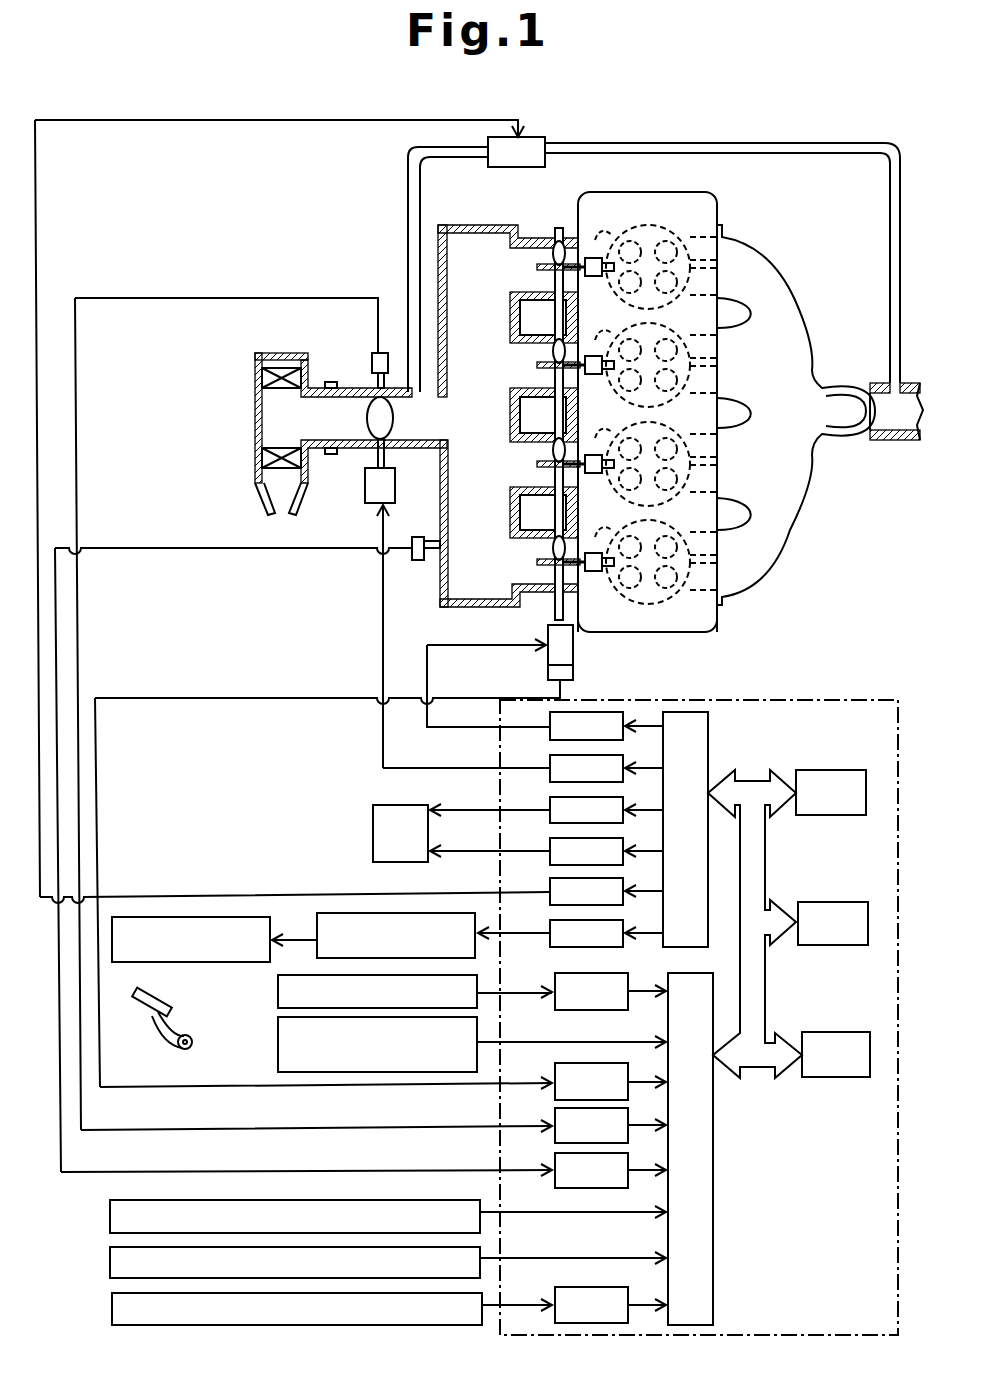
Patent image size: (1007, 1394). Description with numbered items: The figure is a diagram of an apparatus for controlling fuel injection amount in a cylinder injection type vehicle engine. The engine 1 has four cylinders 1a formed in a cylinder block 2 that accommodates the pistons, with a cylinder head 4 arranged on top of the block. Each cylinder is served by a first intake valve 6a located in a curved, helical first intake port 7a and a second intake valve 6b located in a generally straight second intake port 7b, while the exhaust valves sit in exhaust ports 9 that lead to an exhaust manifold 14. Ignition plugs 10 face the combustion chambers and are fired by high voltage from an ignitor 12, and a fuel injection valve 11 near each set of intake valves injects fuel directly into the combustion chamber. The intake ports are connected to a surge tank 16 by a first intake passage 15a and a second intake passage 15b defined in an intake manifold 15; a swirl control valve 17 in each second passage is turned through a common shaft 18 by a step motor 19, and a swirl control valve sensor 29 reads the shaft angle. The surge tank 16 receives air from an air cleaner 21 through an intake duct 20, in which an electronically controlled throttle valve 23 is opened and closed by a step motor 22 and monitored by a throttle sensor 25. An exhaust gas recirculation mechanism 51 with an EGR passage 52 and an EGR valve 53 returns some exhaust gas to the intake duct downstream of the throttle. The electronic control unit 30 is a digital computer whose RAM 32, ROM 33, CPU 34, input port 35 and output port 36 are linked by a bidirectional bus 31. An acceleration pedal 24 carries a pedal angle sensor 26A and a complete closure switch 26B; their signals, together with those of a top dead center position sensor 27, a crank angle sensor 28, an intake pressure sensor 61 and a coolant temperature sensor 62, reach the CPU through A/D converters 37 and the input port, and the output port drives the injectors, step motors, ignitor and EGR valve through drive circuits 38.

The engine 1 is at (716, 193).
The cylinder 1a is at (719, 216).
The cylinder block 2 is at (700, 633).
The cylinder head 4 is at (701, 640).
The first intake valve 6a is at (629, 435).
The second intake valve 6b is at (679, 390).
The first intake port 7a is at (627, 648).
The second intake port 7b is at (620, 208).
The exhaust port 9 is at (720, 270).
The ignition plug 10 is at (268, 917).
The fuel injection valve 11 is at (590, 256).
The ignitor 12 is at (450, 913).
The exhaust manifold 14 is at (812, 470).
The intake manifold 15 is at (522, 225).
The first intake passage 15a is at (537, 288).
The second intake passage 15b is at (537, 262).
The surge tank 16 is at (413, 258).
The swirl control valve 17 is at (556, 228).
The common shaft 18 is at (512, 418).
The step motor 19 is at (548, 662).
The intake duct 20 is at (345, 388).
The air cleaner 21 is at (255, 461).
The step motor 22 is at (365, 485).
The throttle valve 23 is at (393, 420).
The acceleration pedal 24 is at (140, 1006).
The throttle sensor 25 is at (374, 352).
The pedal angle sensor 26A is at (278, 992).
The complete closure switch 26B is at (278, 1040).
The top dead center position sensor 27 is at (110, 1216).
The crank angle sensor 28 is at (110, 1262).
The swirl control valve sensor 29 is at (573, 676).
The electronic control unit 30 is at (815, 695).
The bidirectional bus 31 is at (750, 782).
The random access memory 32 is at (836, 770).
The read only memory 33 is at (836, 902).
The central processing unit 34 is at (836, 1032).
The input port 35 is at (713, 1204).
The output port 36 is at (708, 722).
The A/D converter 37 is at (560, 973).
The drive circuit 38 is at (546, 712).
The exhaust gas recirculation mechanism 51 is at (658, 146).
The EGR passage 52 is at (825, 143).
The EGR valve 53 is at (545, 140).
The intake pressure sensor 61 is at (412, 560).
The coolant temperature sensor 62 is at (112, 1308).